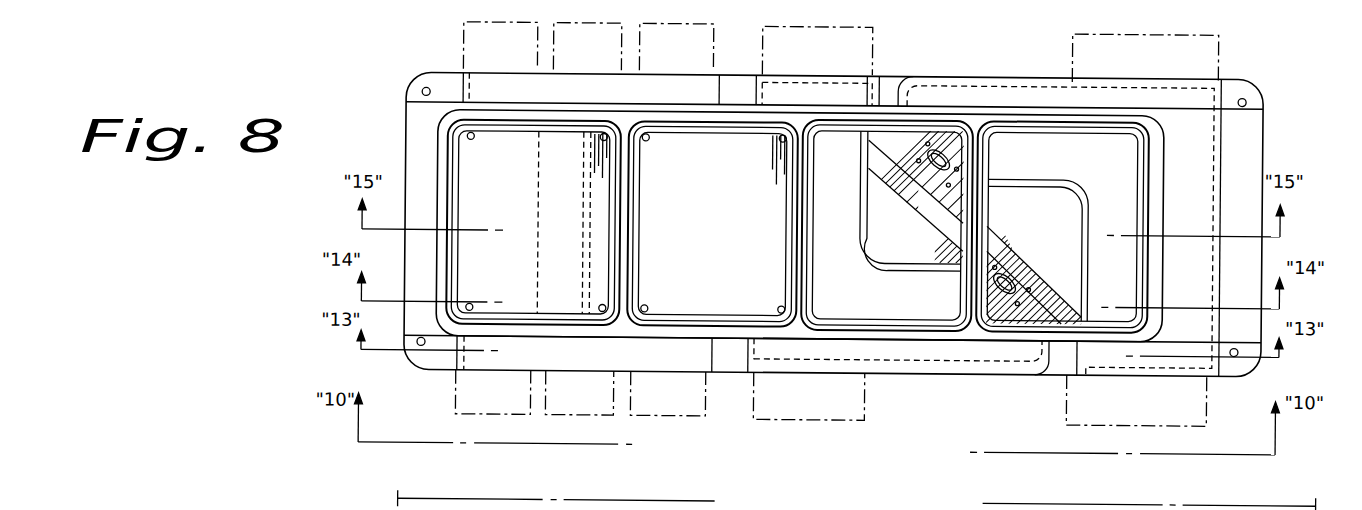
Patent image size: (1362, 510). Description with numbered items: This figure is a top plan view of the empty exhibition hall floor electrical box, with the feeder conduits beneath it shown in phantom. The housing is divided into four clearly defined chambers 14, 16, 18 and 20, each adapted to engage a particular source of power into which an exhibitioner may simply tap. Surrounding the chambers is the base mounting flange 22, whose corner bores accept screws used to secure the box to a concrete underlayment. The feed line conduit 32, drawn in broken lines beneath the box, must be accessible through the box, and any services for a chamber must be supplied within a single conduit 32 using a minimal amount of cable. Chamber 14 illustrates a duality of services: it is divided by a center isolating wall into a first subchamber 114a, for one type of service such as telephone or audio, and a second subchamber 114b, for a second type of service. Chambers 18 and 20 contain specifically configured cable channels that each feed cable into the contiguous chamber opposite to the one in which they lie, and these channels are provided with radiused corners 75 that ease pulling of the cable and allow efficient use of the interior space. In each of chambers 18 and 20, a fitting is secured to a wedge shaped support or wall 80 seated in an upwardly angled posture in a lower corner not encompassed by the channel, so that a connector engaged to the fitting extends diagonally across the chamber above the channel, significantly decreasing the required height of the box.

The base mounting flange 22 is at (425, 131).
The feed line conduit 32 is at (866, 407).
The chamber 14 is at (511, 268).
The subchamber 114a is at (521, 172).
The subchamber 114b is at (561, 165).
The chamber 16 is at (697, 251).
The chamber 18 is at (905, 306).
The chamber 20 is at (1125, 274).
The radiused corners 75 is at (870, 258).
The wedge shaped support or wall 80 is at (916, 186).